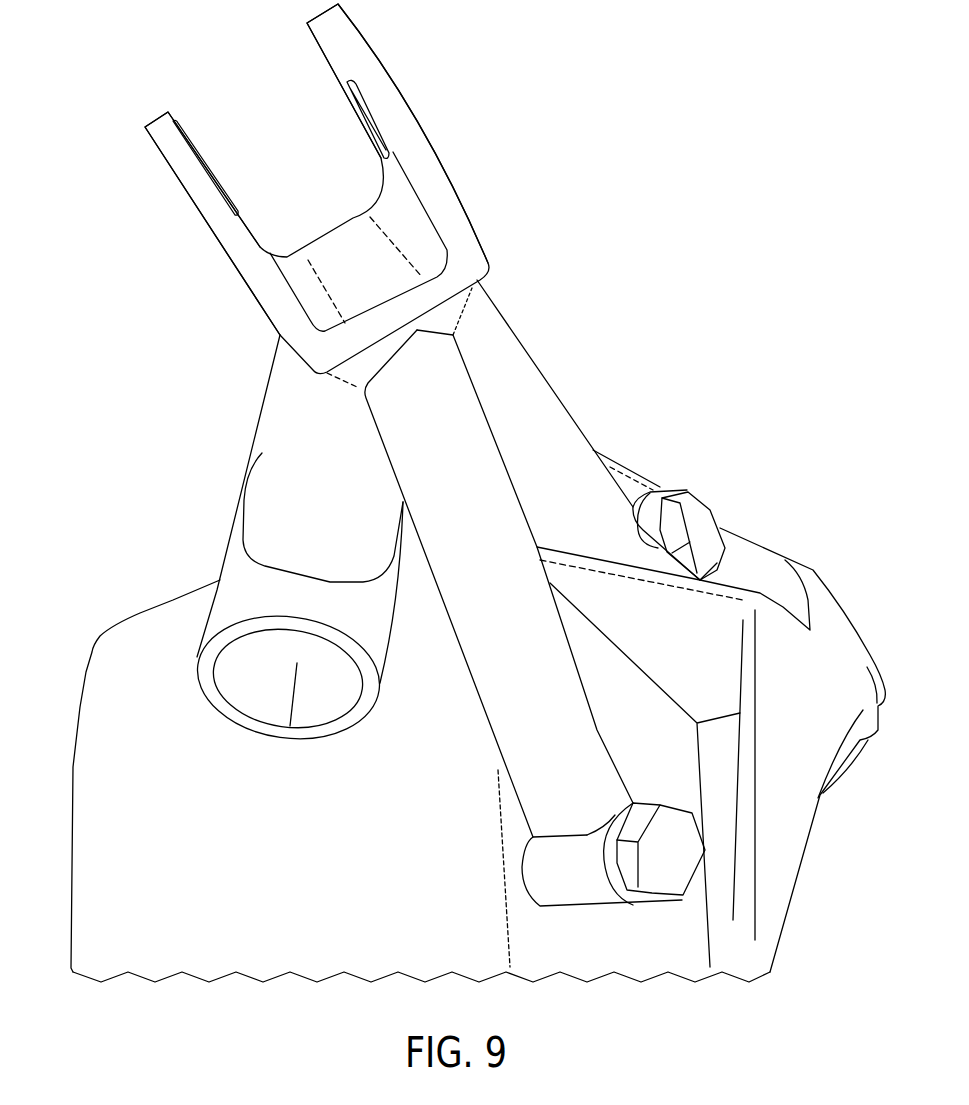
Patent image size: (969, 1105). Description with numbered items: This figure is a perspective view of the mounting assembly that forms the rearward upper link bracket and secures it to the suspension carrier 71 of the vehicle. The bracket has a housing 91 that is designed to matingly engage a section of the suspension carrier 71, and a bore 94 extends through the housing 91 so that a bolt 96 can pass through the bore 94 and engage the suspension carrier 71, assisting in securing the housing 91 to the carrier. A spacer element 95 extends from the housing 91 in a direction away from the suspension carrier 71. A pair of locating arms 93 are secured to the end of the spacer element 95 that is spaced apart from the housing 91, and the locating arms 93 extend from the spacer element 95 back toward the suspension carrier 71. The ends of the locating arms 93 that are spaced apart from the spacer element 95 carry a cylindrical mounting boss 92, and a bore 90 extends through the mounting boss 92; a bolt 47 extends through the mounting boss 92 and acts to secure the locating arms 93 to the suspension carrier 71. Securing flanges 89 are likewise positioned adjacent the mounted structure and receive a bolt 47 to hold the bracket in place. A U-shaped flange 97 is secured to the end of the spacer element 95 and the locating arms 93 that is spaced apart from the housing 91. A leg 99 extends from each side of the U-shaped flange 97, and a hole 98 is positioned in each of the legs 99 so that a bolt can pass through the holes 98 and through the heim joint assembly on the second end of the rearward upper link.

The bolt 47 is at (667, 807).
The suspension carrier 71 is at (84, 702).
The securing flange 89 is at (788, 838).
The bore 90 is at (617, 867).
The housing 91 is at (235, 533).
The cylindrical mounting boss 92 is at (650, 492).
The locating arm 93 is at (537, 363).
The bore 94 is at (220, 713).
The spacer element 95 is at (275, 402).
The bolt 96 is at (290, 726).
The U-shaped flange 97 is at (452, 193).
The hole 98 is at (363, 125).
The leg 99 is at (372, 46).